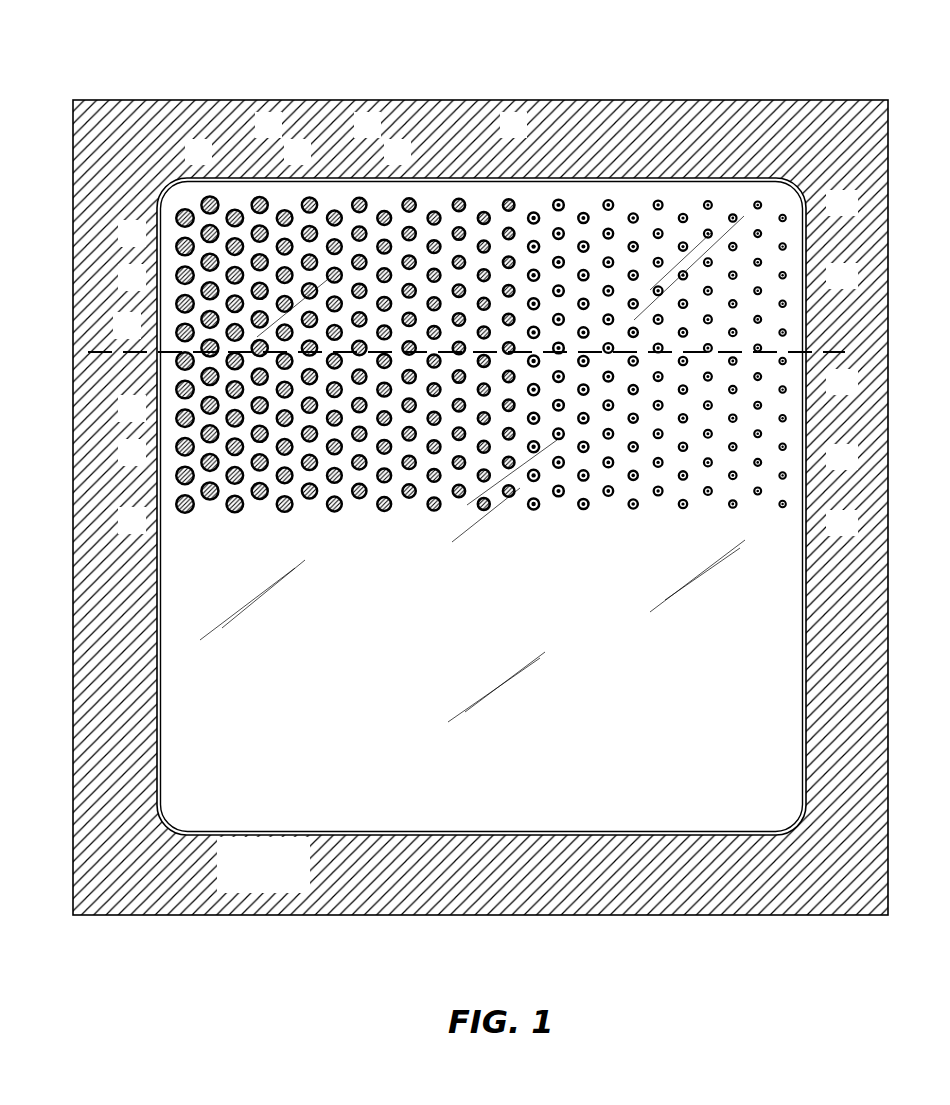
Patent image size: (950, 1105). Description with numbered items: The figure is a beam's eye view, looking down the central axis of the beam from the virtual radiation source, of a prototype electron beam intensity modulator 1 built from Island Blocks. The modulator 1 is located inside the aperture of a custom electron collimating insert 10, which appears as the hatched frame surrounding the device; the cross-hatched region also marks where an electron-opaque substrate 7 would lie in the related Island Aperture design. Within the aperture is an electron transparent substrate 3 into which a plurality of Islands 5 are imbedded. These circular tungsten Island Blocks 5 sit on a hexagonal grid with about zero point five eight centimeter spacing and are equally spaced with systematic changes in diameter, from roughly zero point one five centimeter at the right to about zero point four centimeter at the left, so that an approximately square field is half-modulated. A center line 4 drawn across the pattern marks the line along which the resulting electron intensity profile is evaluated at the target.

The electron beam intensity modulator 1 is at (815, 52).
The electron transparent substrate 3 is at (284, 205).
The center line 4 is at (170, 352).
The Island Blocks 5 is at (259, 198).
The substrate 7 is at (107, 100).
The collimating insert 10 is at (90, 160).